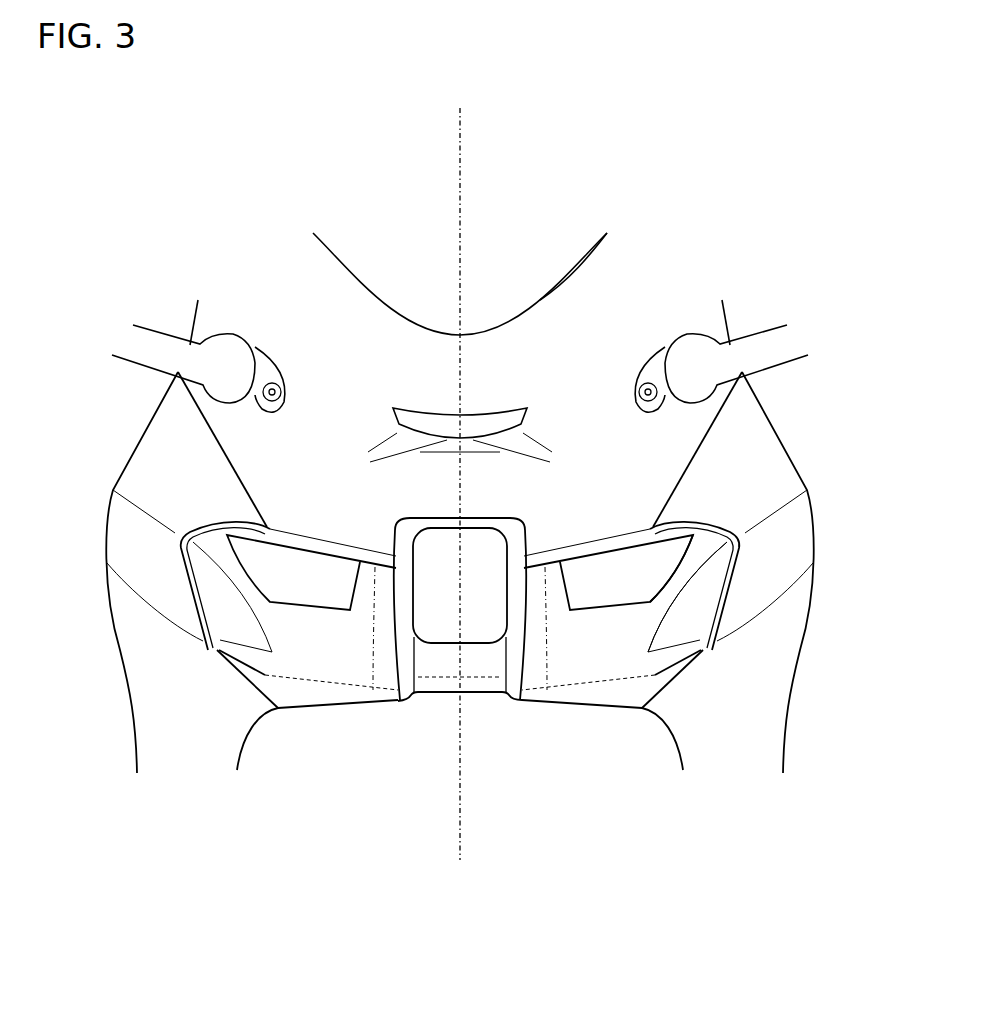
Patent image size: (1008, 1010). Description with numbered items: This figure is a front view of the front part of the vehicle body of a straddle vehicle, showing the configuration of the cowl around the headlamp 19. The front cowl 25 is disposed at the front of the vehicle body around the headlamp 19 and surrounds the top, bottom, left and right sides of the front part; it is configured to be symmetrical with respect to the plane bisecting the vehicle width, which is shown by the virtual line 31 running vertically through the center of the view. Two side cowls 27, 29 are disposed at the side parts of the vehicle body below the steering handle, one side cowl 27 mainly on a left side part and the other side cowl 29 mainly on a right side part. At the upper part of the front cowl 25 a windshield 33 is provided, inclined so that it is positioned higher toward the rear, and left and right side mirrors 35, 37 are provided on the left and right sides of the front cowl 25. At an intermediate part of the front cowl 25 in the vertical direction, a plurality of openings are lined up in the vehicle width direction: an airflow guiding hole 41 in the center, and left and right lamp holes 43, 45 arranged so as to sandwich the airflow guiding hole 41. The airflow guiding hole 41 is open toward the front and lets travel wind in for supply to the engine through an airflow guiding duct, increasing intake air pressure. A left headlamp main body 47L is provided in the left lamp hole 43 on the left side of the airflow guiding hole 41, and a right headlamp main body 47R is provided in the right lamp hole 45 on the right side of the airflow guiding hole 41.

The headlamp 19 is at (637, 608).
The front cowl 25 is at (343, 298).
The side cowl 27 is at (785, 730).
The side cowl 29 is at (130, 697).
The virtual line 31 is at (460, 197).
The windshield 33 is at (560, 265).
The side mirror 35 is at (757, 347).
The side mirror 37 is at (157, 337).
The airflow guiding hole 41 is at (437, 643).
The left lamp hole 43 is at (612, 602).
The right lamp hole 45 is at (300, 600).
The left headlamp main body 47L is at (638, 550).
The right headlamp main body 47R is at (283, 557).